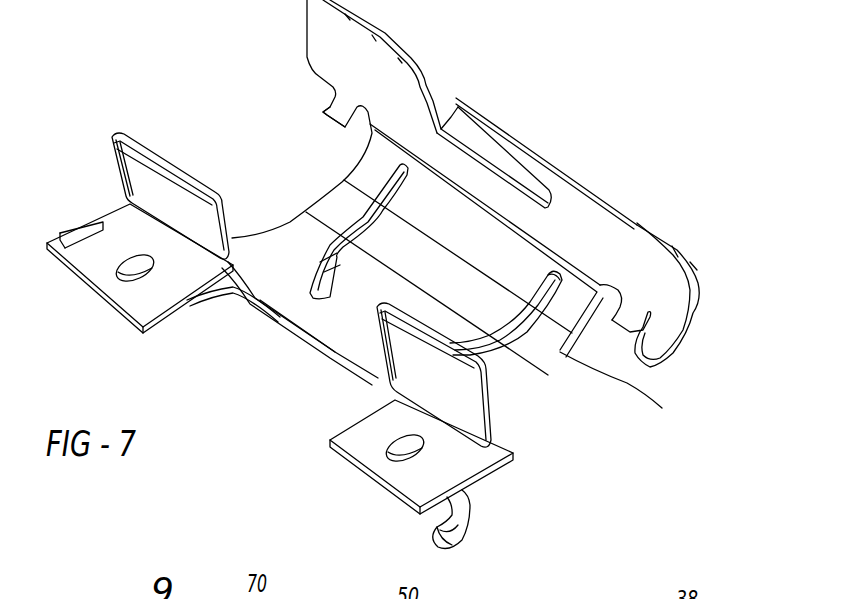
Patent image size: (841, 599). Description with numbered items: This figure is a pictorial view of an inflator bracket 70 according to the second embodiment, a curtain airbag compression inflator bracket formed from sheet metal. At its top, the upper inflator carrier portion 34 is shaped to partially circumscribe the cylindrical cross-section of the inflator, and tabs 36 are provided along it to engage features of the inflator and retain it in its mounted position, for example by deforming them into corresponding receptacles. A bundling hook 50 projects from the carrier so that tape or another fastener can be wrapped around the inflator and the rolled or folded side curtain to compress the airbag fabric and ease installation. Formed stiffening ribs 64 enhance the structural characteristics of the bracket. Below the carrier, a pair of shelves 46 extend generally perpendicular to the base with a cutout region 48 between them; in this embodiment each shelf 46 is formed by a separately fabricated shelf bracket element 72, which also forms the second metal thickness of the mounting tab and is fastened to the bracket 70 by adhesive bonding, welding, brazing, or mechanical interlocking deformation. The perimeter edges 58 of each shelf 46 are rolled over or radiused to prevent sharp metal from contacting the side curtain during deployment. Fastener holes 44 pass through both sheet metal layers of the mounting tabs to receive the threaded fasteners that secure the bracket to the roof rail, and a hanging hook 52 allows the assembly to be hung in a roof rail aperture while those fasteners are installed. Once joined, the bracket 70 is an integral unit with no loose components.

The inflator bracket 70 is at (565, 85).
The upper inflator carrier portion 34 is at (588, 182).
The tabs 36 is at (323, 115).
The fastener holes 44 is at (130, 272).
The shelves 46 is at (157, 177).
The cutout region 48 is at (335, 352).
The bundling hook 50 is at (473, 123).
The hanging hook 52 is at (450, 530).
The perimeter edges 58 is at (137, 137).
The stiffening ribs 64 is at (550, 292).
The shelf bracket element 72 is at (165, 290).